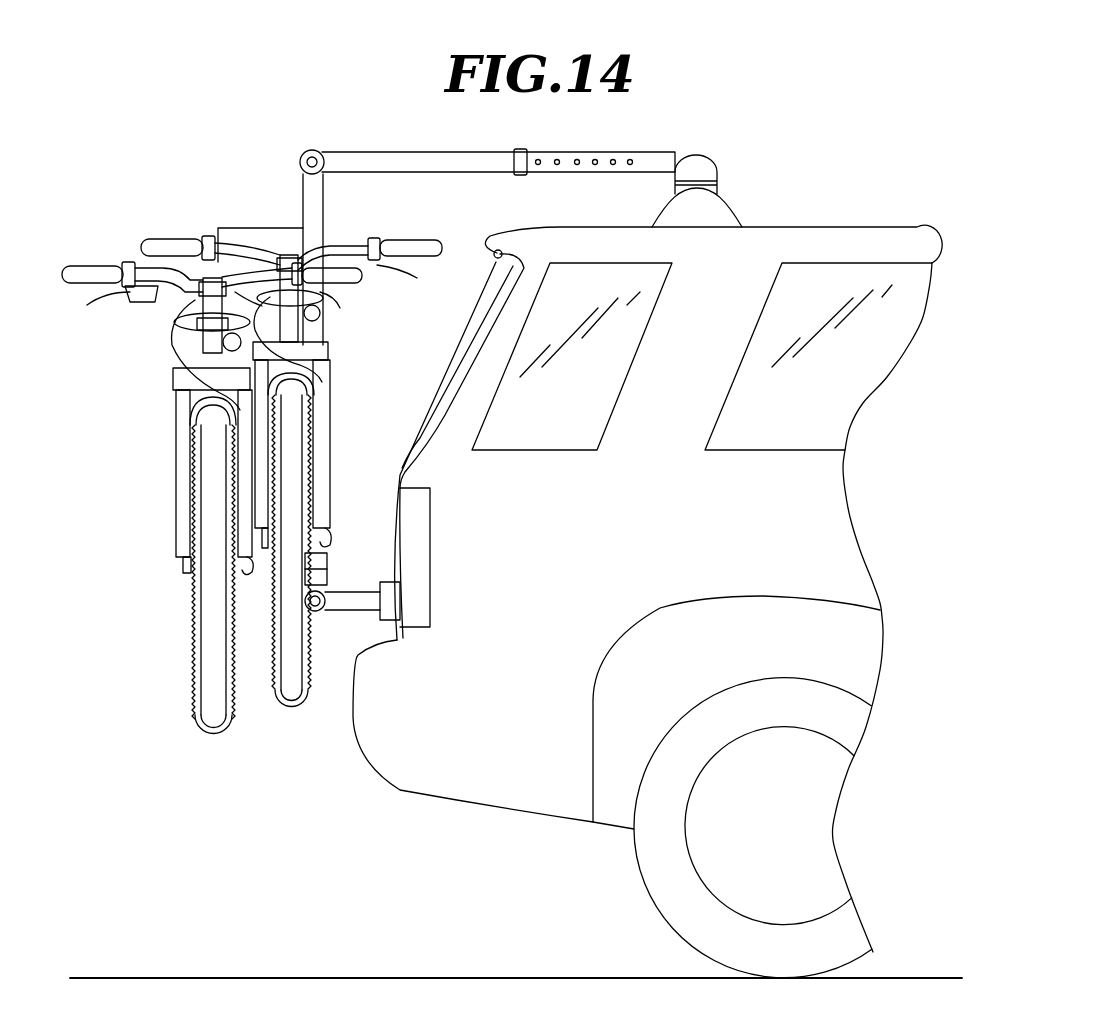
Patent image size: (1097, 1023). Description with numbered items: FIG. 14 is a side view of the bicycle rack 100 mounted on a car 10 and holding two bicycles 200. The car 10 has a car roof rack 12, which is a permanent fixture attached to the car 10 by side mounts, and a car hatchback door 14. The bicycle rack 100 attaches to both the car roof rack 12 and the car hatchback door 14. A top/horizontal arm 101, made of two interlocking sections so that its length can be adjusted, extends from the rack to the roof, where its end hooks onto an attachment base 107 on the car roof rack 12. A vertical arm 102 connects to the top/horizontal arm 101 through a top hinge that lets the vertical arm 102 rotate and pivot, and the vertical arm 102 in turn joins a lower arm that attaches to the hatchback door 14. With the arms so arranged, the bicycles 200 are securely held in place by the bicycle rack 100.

The car 10 is at (856, 208).
The car roof rack 12 is at (713, 212).
The car hatchback door 14 is at (392, 463).
The bicycle rack 100 is at (290, 118).
The top/horizontal arm 101 is at (400, 152).
The vertical arm 102 is at (303, 200).
The attachment base 107 is at (718, 174).
The bicycles 200 is at (150, 436).